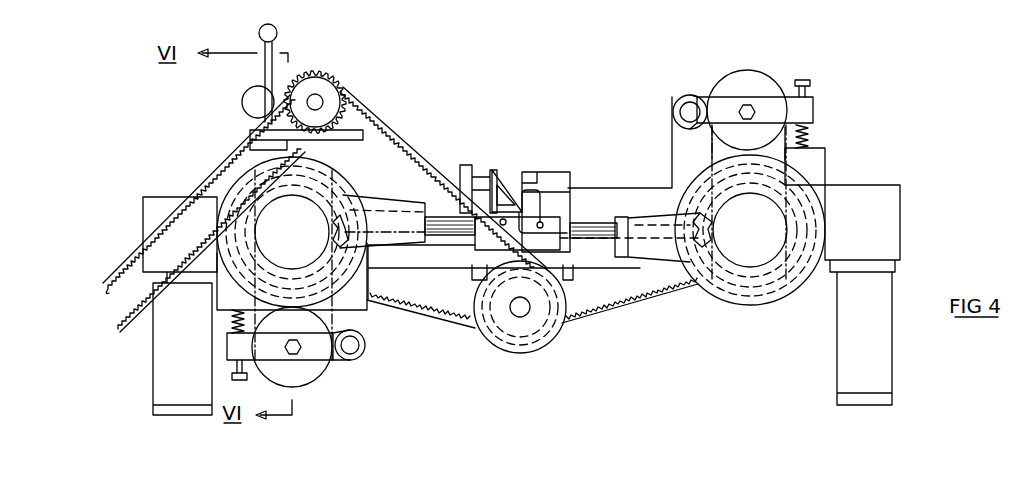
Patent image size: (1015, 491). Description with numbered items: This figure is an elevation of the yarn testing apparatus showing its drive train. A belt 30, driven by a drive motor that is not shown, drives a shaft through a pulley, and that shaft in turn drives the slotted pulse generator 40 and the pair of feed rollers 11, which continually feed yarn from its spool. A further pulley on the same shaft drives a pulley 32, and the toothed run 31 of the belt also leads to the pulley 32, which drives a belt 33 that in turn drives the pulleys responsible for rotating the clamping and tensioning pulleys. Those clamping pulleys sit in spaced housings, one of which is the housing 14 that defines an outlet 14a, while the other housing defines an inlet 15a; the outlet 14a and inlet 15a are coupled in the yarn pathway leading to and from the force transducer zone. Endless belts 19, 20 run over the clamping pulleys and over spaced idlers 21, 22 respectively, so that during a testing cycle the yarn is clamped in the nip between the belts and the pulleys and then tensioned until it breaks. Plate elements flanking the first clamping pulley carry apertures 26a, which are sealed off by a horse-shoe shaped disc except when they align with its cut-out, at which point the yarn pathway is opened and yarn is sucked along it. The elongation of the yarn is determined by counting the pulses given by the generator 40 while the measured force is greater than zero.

The feed rollers 11 is at (244, 99).
The housing 14 is at (237, 280).
The outlet 14a is at (405, 210).
The inlet 15a is at (628, 230).
The belt 19 is at (336, 311).
The belt 20 is at (820, 152).
The idler 21 is at (313, 373).
The idler 22 is at (756, 84).
The apertures 26a is at (340, 225).
The belt 30 is at (105, 286).
The toothed belt 31 is at (408, 143).
The pulley 32 is at (540, 348).
The belt 33 is at (415, 313).
The slotted pulse generator 40 is at (330, 70).